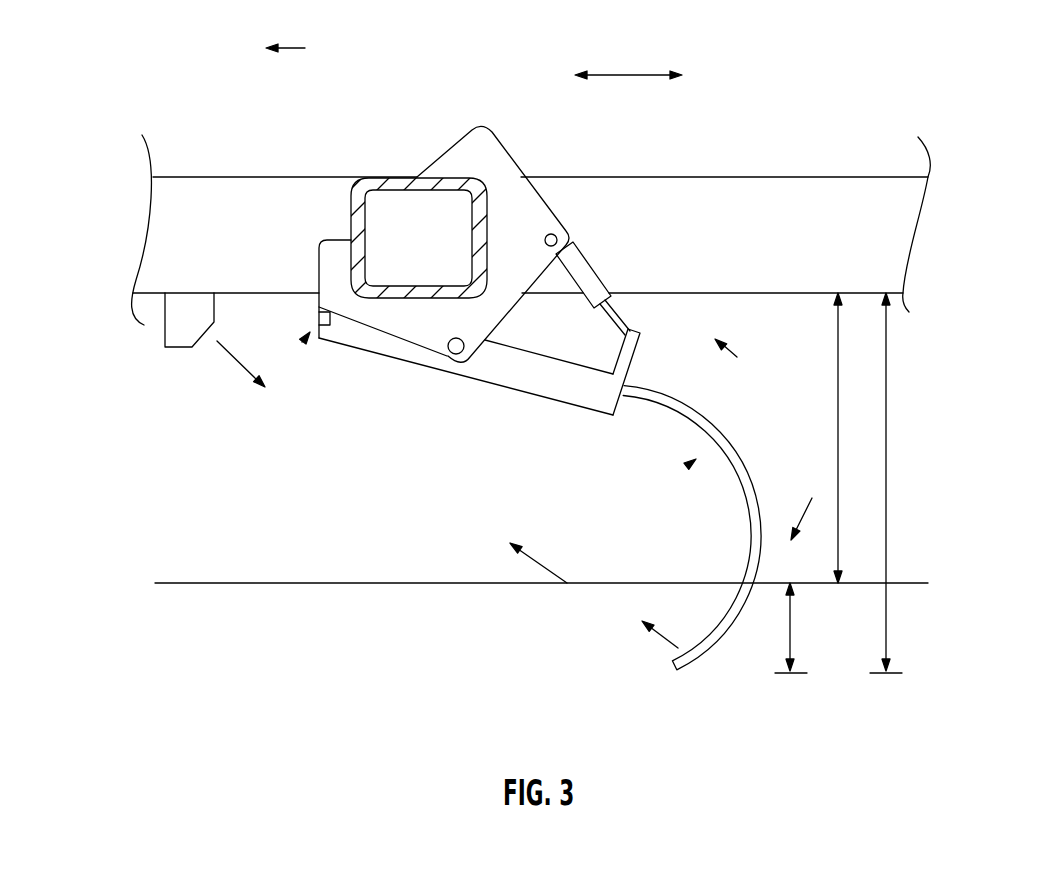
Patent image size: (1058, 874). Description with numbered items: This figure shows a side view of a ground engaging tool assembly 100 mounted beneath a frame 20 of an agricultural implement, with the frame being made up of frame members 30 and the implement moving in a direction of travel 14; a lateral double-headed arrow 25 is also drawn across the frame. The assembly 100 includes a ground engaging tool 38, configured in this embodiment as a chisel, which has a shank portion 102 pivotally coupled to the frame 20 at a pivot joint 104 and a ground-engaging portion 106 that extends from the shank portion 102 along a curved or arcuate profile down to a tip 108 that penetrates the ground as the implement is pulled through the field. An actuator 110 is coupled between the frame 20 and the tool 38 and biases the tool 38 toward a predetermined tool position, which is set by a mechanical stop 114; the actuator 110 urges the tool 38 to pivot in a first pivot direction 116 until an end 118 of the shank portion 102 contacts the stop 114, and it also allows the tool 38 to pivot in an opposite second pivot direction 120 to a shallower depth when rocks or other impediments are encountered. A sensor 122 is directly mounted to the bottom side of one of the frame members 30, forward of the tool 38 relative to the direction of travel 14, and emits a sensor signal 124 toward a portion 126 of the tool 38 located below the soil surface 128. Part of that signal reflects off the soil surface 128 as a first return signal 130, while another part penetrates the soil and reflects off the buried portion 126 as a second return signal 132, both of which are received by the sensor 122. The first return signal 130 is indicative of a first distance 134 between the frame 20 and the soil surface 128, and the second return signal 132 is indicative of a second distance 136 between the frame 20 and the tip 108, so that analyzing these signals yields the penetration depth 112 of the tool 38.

The ground engaging tool assembly 100 is at (88, 70).
The direction of travel 14 is at (305, 48).
The frame 20 is at (258, 151).
The frame member 30 is at (201, 177).
The lateral direction 25 is at (612, 78).
The sensor 122 is at (182, 348).
The sensor signal 124 is at (235, 367).
The end of shank portion 118 is at (302, 342).
The mechanical stop 114 is at (320, 322).
The shank portion 102 is at (529, 394).
The pivot joint 104 is at (452, 351).
The actuator 110 is at (588, 268).
The ground-engaging portion 106 is at (725, 447).
The tip 108 is at (673, 672).
The portion of the ground engaging tool 126 is at (699, 645).
The ground engaging tool 38 is at (688, 466).
The second pivot direction 120 is at (736, 355).
The first pivot direction 116 is at (812, 500).
The soil surface 128 is at (254, 582).
The first return signal 130 is at (536, 555).
The second return signal 132 is at (656, 636).
The first distance 134 is at (836, 400).
The second distance 136 is at (888, 455).
The penetration depth 112 is at (791, 630).